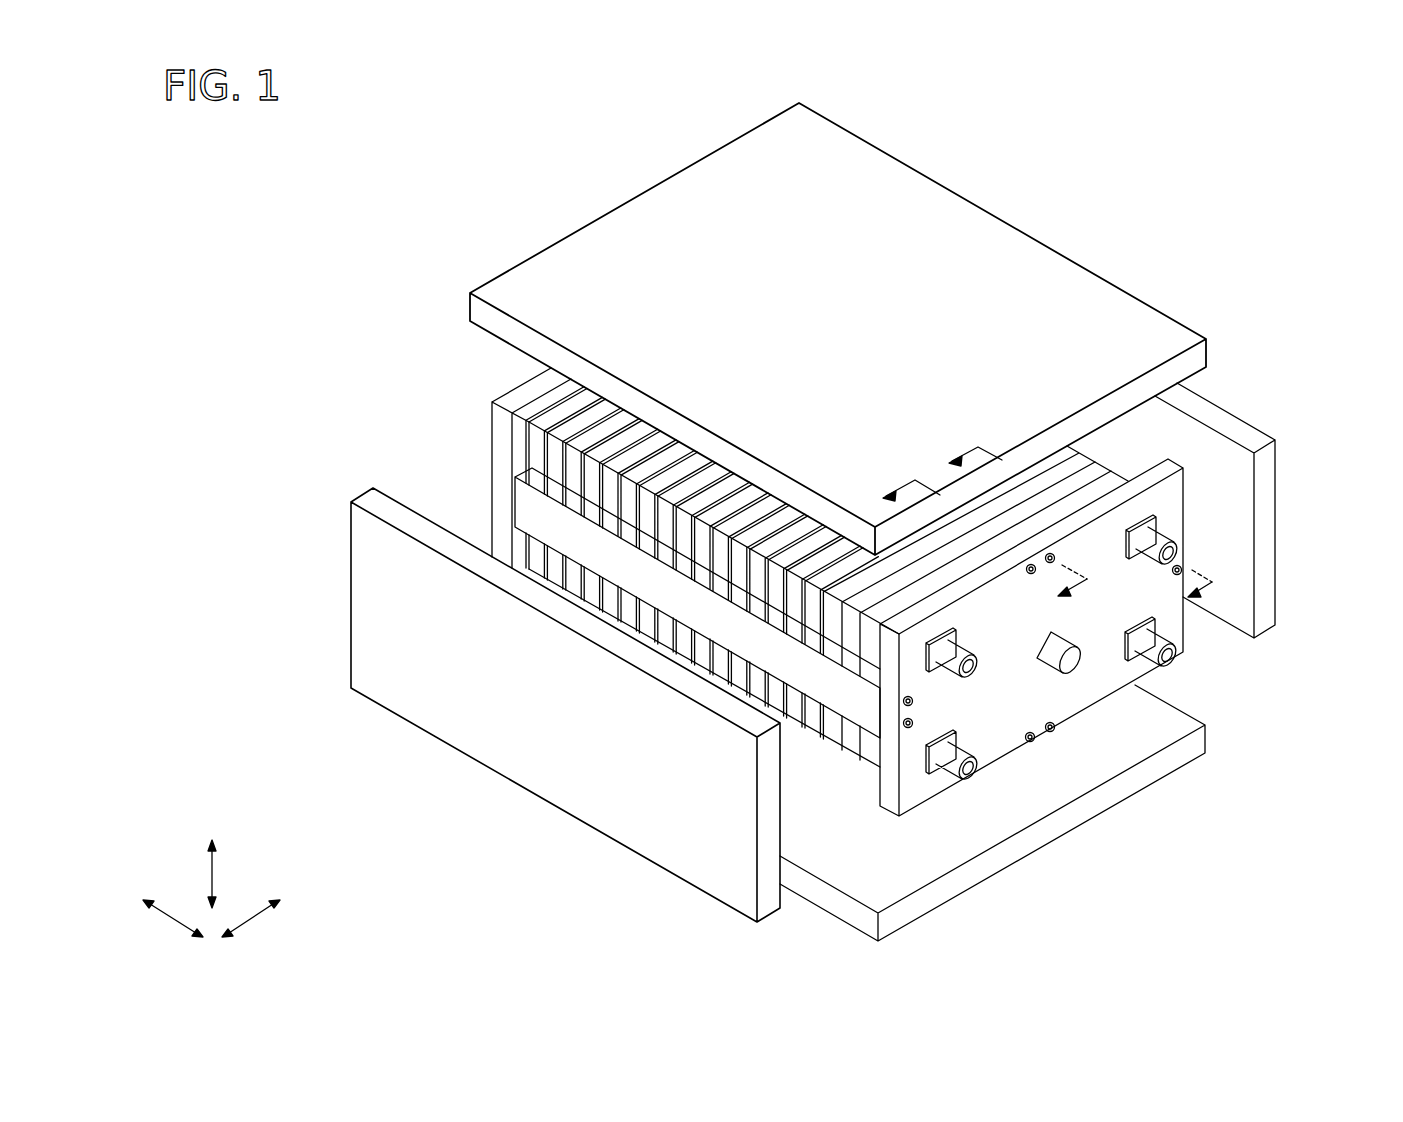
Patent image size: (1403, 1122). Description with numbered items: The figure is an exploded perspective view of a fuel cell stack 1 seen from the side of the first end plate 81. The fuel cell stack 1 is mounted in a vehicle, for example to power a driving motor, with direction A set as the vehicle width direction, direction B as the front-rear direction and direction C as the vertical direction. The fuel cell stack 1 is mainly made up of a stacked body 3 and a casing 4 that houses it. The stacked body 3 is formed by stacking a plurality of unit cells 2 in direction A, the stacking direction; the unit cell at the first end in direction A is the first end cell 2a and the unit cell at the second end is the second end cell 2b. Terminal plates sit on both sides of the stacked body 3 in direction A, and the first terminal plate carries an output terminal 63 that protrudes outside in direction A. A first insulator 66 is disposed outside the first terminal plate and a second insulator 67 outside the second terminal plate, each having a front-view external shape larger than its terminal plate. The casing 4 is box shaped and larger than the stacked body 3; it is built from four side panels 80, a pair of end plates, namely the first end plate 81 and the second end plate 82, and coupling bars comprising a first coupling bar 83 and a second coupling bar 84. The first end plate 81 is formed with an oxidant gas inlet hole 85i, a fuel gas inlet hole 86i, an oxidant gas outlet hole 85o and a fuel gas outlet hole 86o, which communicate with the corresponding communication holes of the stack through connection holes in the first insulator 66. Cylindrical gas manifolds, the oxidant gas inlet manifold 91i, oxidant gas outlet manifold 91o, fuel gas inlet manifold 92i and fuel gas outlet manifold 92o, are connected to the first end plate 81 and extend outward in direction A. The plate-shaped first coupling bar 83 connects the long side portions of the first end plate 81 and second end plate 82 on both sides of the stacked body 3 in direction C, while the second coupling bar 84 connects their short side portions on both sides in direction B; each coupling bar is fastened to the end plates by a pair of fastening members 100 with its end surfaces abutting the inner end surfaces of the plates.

The fuel cell stack 1 is at (1178, 250).
The unit cell 2 is at (732, 672).
The first end cell 2a is at (840, 745).
The second end cell 2b is at (556, 562).
The stacked body 3 is at (732, 642).
The casing 4 is at (838, 326).
The output terminal 63 is at (1080, 668).
The first insulator 66 is at (852, 612).
The second insulator 67 is at (533, 450).
The side panel 80 is at (1052, 258).
The first end plate 81 is at (1110, 673).
The second end plate 82 is at (535, 398).
The first coupling bar 83 is at (985, 542).
The second coupling bar 84 is at (532, 506).
The oxidant gas outlet hole 85o is at (1049, 798).
The oxidant gas inlet hole 85i is at (1244, 516).
The fuel gas outlet hole 86o is at (1025, 817).
The fuel gas inlet hole 86i is at (1227, 687).
The oxidant gas outlet manifold 91o is at (980, 772).
The oxidant gas inlet manifold 91i is at (1175, 550).
The fuel gas outlet manifold 92o is at (980, 668).
The fuel gas inlet manifold 92i is at (1176, 658).
The fastening member 100 is at (1050, 553).